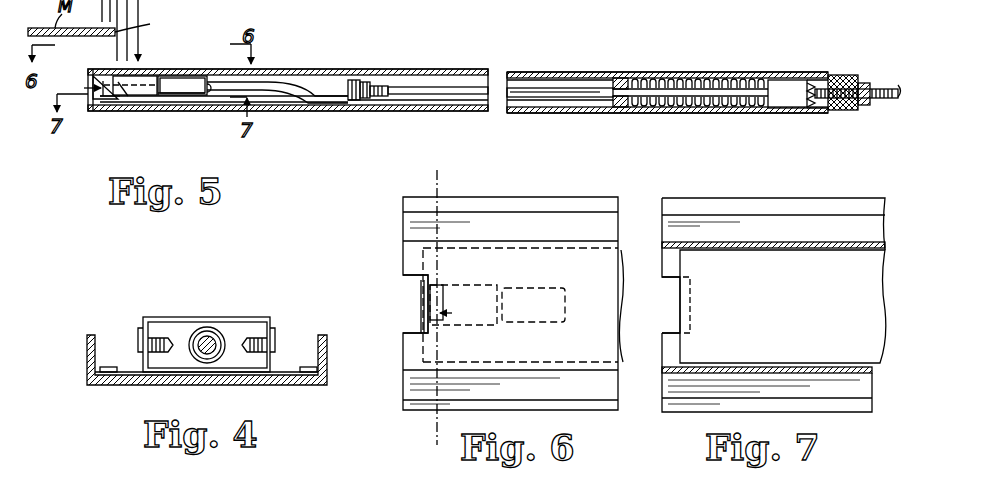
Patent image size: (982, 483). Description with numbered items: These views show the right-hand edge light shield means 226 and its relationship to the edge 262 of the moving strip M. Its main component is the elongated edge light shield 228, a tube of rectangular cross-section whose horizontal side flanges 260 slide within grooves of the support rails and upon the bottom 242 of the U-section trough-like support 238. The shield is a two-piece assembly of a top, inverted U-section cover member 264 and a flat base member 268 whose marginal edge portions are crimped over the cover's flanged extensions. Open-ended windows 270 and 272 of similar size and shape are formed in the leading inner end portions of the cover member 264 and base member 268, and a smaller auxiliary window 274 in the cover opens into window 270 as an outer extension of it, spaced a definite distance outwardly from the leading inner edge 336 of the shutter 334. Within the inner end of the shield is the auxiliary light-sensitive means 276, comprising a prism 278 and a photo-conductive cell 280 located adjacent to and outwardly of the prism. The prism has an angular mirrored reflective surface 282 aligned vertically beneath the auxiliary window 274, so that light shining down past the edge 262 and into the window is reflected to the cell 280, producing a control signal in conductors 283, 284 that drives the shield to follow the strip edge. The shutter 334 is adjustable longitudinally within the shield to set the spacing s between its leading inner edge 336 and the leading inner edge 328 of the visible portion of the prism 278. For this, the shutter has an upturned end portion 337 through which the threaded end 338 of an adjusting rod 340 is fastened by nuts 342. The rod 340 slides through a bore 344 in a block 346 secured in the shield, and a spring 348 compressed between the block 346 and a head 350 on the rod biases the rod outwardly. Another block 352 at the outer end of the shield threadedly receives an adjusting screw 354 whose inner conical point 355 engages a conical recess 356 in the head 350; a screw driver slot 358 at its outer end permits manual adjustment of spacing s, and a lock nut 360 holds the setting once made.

In FIG. 5, the edge light shield means 226 is at (469, 54).
In FIG. 5, the edge light shield 228 is at (409, 112).
In FIG. 4, the edge light shield 228 is at (241, 315).
In FIG. 4, the support 238 is at (120, 386).
In FIG. 4, the bottom 242 is at (292, 367).
In FIG. 4, the side flanges 260 is at (107, 367).
In FIG. 6, the side flanges 260 is at (553, 203).
In FIG. 7, the side flanges 260 is at (770, 203).
In FIG. 5, the edge of the strip 262 is at (151, 20).
In FIG. 6, the edge of the strip 262 is at (440, 190).
In FIG. 4, the cover member 264 is at (173, 317).
In FIG. 4, the base member 268 is at (260, 387).
In FIG. 6, the window 270 is at (408, 280).
In FIG. 7, the window 272 is at (673, 278).
In FIG. 5, the auxiliary window 274 is at (117, 74).
In FIG. 6, the auxiliary window 274 is at (441, 290).
In FIG. 5, the auxiliary light-sensitive means 276 is at (164, 76).
In FIG. 6, the auxiliary light-sensitive means 276 is at (521, 290).
In FIG. 5, the prism 278 is at (117, 80).
In FIG. 6, the prism 278 is at (420, 315).
In FIG. 5, the photo-conductive cell 280 is at (183, 96).
In FIG. 6, the photo-conductive cell 280 is at (545, 320).
In FIG. 5, the mirrored reflective surface 282 is at (128, 90).
In FIG. 5, the conductor 283 is at (310, 100).
In FIG. 5, the conductor 284 is at (310, 106).
In FIG. 5, the leading inner edge of the prism 328 is at (108, 80).
In FIG. 6, the leading inner edge of the prism 328 is at (421, 300).
In FIG. 5, the shutter 334 is at (208, 103).
In FIG. 7, the shutter 334 is at (803, 311).
In FIG. 5, the leading inner edge of the shutter 336 is at (110, 101).
In FIG. 7, the leading inner edge of the shutter 336 is at (683, 325).
In FIG. 5, the upturned end portion 337 is at (358, 80).
In FIG. 5, the threaded end 338 is at (384, 87).
In FIG. 5, the adjusting rod 340 is at (538, 88).
In FIG. 5, the nuts 342 is at (347, 89).
In FIG. 5, the bore 344 is at (620, 79).
In FIG. 5, the block 346 is at (627, 108).
In FIG. 5, the spring 348 is at (673, 80).
In FIG. 5, the head 350 is at (773, 80).
In FIG. 5, the block 352 is at (832, 76).
In FIG. 5, the adjusting screw 354 is at (882, 100).
In FIG. 5, the conical point 355 is at (822, 78).
In FIG. 5, the conical recess 356 is at (818, 110).
In FIG. 5, the screw driver slot 358 is at (897, 83).
In FIG. 5, the lock nut 360 is at (863, 107).